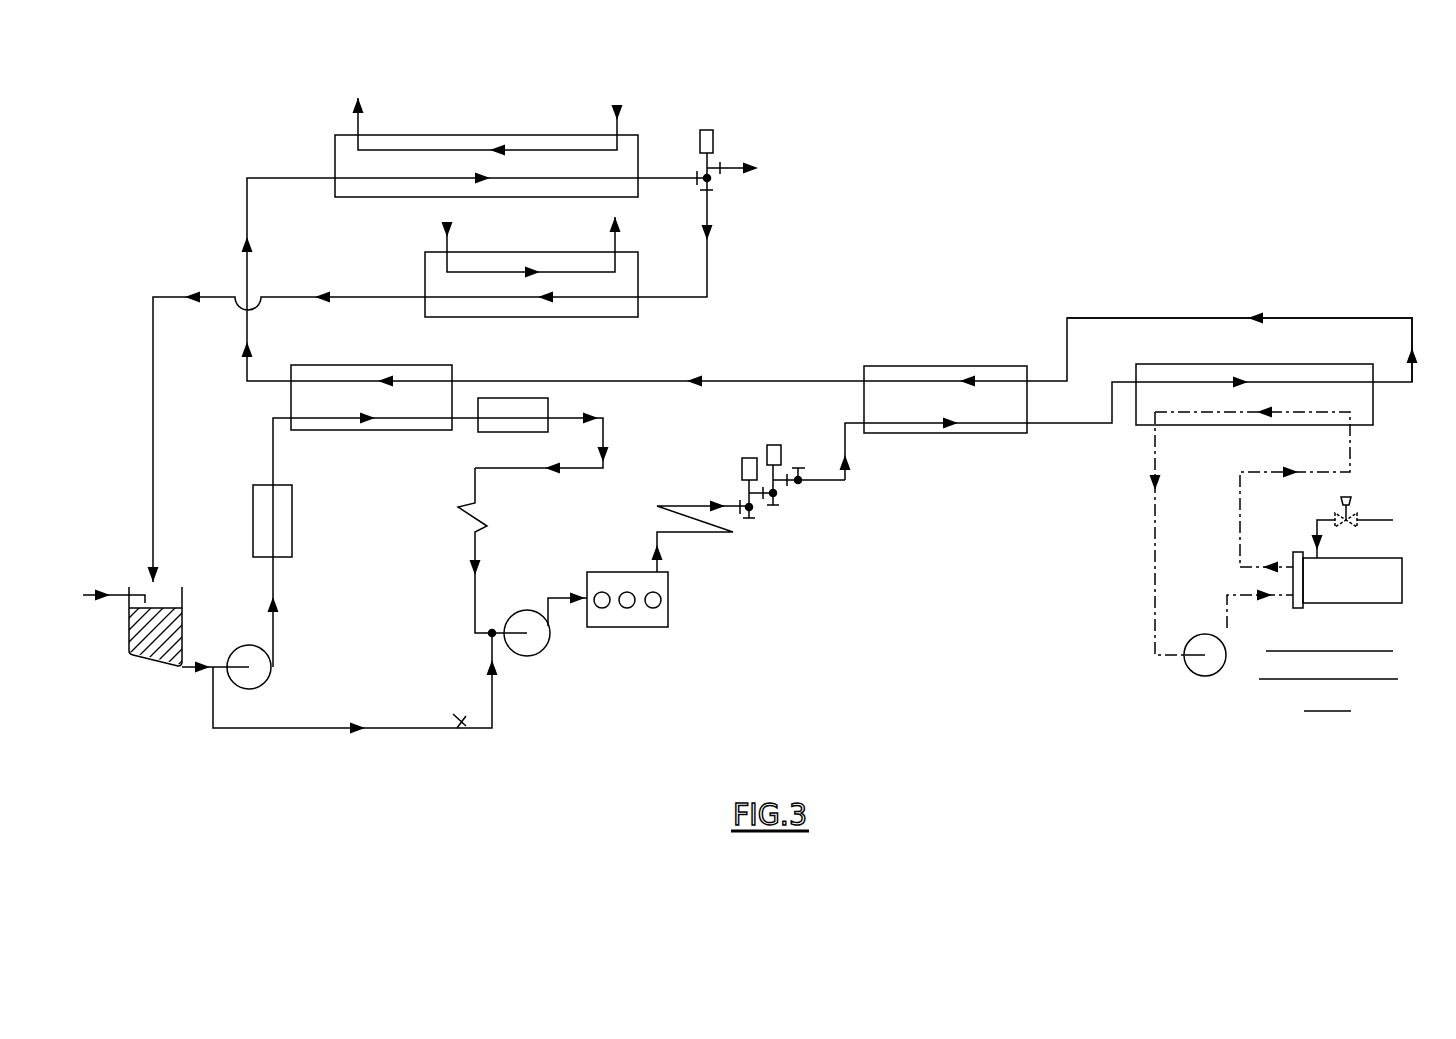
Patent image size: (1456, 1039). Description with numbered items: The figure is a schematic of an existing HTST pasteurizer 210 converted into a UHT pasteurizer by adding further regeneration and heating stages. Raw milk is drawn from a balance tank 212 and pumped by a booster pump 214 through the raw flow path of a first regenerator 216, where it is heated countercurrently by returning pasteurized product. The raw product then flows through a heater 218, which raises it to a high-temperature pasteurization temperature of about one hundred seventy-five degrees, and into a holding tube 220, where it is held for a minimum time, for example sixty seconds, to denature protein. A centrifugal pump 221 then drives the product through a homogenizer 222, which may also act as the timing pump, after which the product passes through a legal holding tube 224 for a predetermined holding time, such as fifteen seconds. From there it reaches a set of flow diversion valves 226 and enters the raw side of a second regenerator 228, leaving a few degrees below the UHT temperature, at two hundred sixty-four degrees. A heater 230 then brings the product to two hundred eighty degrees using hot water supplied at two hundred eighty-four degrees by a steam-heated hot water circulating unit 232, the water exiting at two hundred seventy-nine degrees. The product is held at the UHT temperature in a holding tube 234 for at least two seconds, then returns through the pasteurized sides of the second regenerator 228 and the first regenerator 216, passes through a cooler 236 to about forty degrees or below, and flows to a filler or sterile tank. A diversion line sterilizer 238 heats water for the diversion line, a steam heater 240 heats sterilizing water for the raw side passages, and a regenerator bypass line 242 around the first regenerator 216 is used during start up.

The HTST pasteurizer 210 is at (378, 505).
The balance tank 212 is at (158, 663).
The booster pump 214 is at (270, 684).
The regenerator 216 is at (387, 430).
The heater 218 is at (548, 408).
The holding tube 220 is at (485, 517).
The centrifugal pump 221 is at (525, 657).
The homogenizer 222 is at (635, 627).
The legal holding tube 224 is at (698, 532).
The flow diversion valves 226 is at (773, 445).
The second regenerator 228 is at (948, 433).
The heater 230 is at (1233, 362).
The hot water circulating unit 232 is at (1422, 727).
The holding tube 234 is at (1348, 315).
The cooler 236 is at (635, 133).
The diversion line sterilizer 238 is at (583, 317).
The steam heater 240 is at (292, 535).
The regenerator bypass line 242 is at (485, 730).